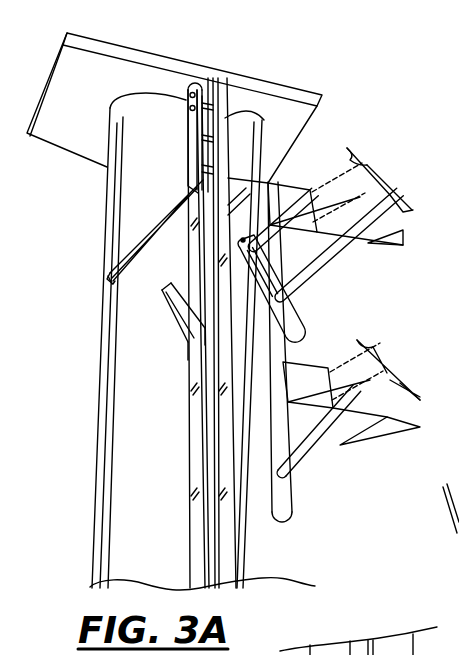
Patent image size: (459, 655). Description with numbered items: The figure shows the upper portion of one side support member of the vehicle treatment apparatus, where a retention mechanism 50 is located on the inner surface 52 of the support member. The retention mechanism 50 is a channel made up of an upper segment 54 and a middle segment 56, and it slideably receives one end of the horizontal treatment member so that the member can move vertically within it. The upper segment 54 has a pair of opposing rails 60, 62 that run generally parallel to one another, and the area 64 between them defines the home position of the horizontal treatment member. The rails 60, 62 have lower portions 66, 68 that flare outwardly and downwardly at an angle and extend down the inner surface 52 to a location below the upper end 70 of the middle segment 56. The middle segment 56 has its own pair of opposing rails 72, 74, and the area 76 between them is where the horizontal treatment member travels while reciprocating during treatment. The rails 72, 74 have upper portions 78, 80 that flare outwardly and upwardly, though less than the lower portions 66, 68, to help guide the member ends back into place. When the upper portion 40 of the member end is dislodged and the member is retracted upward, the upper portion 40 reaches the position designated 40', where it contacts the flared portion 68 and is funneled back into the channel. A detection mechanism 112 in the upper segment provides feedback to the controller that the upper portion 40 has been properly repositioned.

The upper portion 40 is at (348, 420).
The repositioned position of upper portion 40' is at (340, 224).
The retention mechanism 50 is at (177, 507).
The inner surface 52 is at (201, 349).
The upper segment 54 is at (180, 157).
The middle segment 56 is at (195, 458).
The opposing rail 60 is at (177, 205).
The opposing rail 62 is at (225, 180).
The area between opposing rails 64 is at (212, 140).
The lower portion 66 is at (108, 275).
The lower portion 68 is at (313, 312).
The upper end 70 is at (162, 333).
The opposing rail 72 is at (195, 557).
The opposing rail 74 is at (240, 543).
The area between opposing rails 76 is at (223, 572).
The upper portion 78 is at (167, 305).
The upper portion 80 is at (235, 267).
The detection mechanism 112 is at (218, 158).